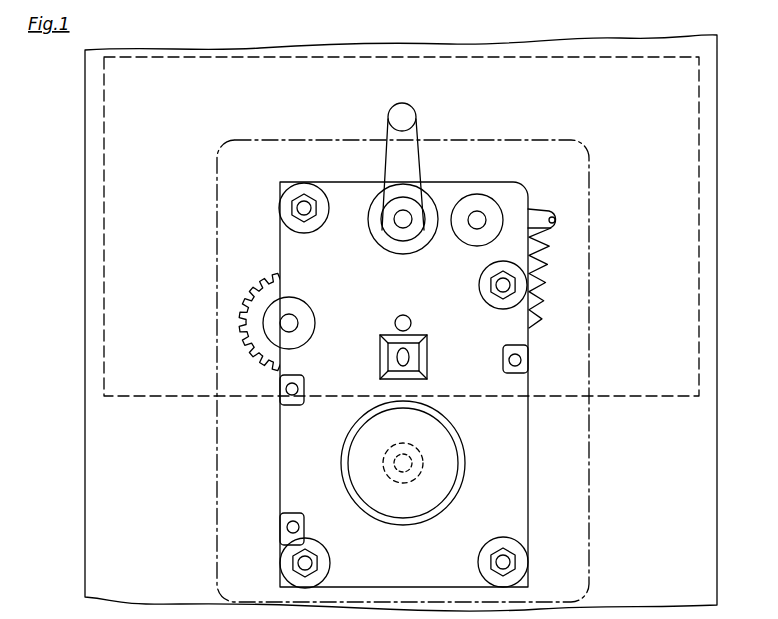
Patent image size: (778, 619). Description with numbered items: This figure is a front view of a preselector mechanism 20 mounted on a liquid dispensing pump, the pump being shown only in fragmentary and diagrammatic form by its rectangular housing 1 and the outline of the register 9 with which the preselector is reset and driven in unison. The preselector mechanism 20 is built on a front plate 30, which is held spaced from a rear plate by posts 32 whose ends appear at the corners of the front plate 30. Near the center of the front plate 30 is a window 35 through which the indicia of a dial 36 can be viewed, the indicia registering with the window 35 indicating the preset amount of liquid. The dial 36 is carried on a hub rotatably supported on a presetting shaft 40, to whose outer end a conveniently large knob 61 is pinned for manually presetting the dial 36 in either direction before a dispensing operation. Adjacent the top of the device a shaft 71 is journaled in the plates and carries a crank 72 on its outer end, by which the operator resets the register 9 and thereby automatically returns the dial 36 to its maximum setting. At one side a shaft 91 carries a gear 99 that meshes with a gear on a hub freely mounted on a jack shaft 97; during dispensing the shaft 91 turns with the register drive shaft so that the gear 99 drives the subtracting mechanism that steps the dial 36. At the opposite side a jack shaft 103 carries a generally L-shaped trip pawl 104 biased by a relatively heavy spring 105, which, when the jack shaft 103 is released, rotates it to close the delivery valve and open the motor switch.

The housing 1 is at (85, 105).
The register 9 is at (104, 140).
The preselector mechanism 20 is at (530, 360).
The front plate 30 is at (527, 480).
The posts 32 is at (304, 205).
The window 35 is at (386, 355).
The dial 36 is at (420, 356).
The presetting shaft 40 is at (410, 460).
The knob 61 is at (464, 466).
The shaft 71 is at (397, 222).
The crank 72 is at (389, 126).
The shaft 91 is at (291, 320).
The jack shaft 97 is at (398, 318).
The gear 99 is at (258, 284).
The jack shaft 103 is at (478, 216).
The trip pawl 104 is at (538, 212).
The spring 105 is at (545, 279).